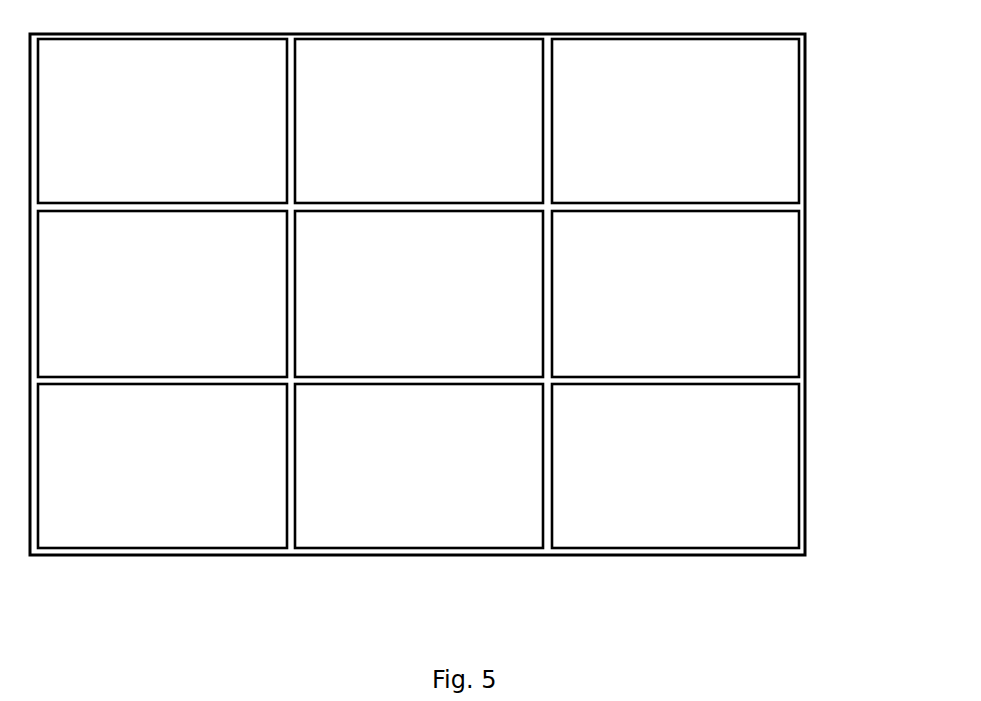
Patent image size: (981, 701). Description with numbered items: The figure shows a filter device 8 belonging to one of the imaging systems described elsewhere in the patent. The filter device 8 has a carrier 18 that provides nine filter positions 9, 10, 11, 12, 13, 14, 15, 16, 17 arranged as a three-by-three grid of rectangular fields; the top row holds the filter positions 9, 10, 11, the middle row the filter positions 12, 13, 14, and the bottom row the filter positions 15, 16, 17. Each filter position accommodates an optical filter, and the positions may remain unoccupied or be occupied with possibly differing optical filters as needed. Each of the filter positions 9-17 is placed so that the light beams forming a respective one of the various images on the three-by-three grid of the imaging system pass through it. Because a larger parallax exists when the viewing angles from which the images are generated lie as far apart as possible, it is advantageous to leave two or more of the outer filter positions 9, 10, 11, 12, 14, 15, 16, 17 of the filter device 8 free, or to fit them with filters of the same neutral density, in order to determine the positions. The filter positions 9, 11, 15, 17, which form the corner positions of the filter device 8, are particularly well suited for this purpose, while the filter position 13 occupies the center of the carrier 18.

The filter device 8 is at (477, 294).
The carrier 18 is at (805, 203).
The filter position 9 is at (170, 132).
The filter position 10 is at (410, 130).
The filter position 11 is at (669, 134).
The filter position 12 is at (179, 304).
The filter position 13 is at (410, 301).
The filter position 14 is at (666, 305).
The filter position 15 is at (141, 475).
The filter position 16 is at (410, 476).
The filter position 17 is at (666, 478).